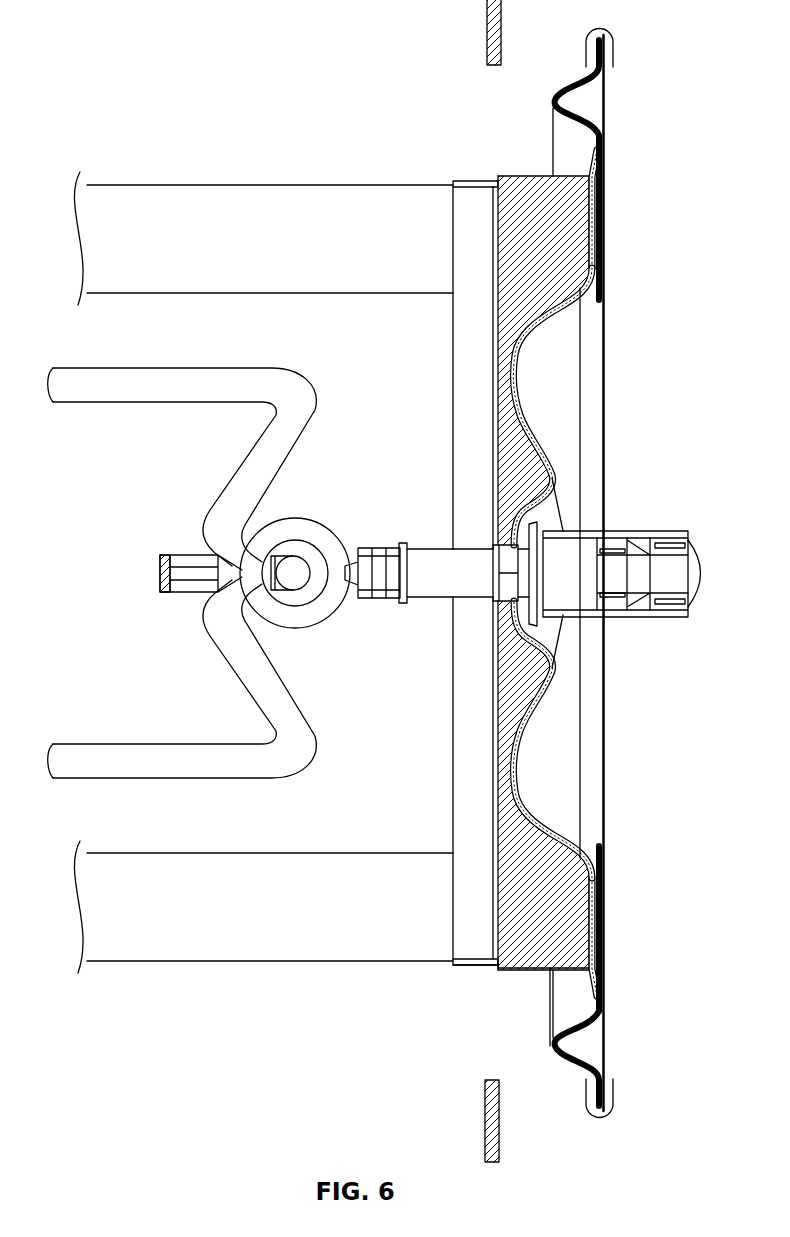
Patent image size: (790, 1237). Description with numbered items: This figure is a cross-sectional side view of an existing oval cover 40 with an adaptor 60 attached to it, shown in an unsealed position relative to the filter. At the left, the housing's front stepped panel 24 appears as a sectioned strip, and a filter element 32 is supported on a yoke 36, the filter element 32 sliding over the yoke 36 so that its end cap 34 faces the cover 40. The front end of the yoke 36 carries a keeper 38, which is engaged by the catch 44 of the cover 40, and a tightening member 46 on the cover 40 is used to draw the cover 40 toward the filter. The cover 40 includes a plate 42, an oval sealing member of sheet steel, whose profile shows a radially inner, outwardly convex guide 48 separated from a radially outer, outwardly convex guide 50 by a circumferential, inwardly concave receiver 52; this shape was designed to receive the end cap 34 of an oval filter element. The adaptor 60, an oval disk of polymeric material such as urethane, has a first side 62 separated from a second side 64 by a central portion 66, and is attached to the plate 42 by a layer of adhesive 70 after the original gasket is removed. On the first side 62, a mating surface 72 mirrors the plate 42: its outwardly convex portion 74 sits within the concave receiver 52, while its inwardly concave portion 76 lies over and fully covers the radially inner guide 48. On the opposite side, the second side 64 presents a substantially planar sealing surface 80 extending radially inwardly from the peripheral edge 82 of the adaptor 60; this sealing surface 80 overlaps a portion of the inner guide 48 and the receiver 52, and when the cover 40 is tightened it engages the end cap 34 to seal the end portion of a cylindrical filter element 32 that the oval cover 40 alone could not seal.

The front stepped panel 24 is at (486, 30).
The filter element 32 is at (249, 185).
The end cap 34 is at (490, 905).
The yoke 36 is at (192, 368).
The keeper 38 is at (298, 560).
The cover 40 is at (604, 100).
The plate 42 is at (550, 1020).
The catch 44 is at (312, 625).
The tightening member 46 is at (650, 532).
The radially inner guide 48 is at (525, 780).
The radially outer guide 50 is at (578, 1032).
The receiver 52 is at (600, 940).
The adaptor 60 is at (570, 247).
The first side 62 is at (594, 152).
The second side 64 is at (498, 180).
The central portion 66 is at (532, 196).
The layer of adhesive 70 is at (603, 205).
The mating surface 72 is at (598, 993).
The outwardly convex portion 74 is at (600, 906).
The inwardly concave portion 76 is at (525, 345).
The sealing surface 80 is at (494, 970).
The peripheral edge 82 is at (540, 970).